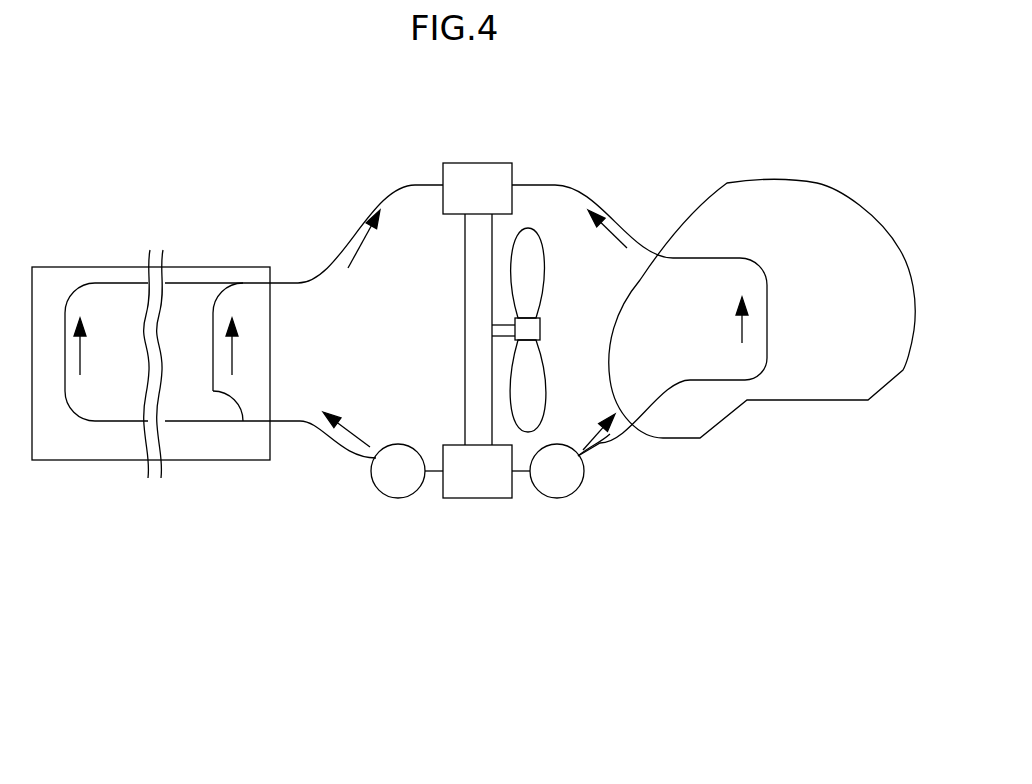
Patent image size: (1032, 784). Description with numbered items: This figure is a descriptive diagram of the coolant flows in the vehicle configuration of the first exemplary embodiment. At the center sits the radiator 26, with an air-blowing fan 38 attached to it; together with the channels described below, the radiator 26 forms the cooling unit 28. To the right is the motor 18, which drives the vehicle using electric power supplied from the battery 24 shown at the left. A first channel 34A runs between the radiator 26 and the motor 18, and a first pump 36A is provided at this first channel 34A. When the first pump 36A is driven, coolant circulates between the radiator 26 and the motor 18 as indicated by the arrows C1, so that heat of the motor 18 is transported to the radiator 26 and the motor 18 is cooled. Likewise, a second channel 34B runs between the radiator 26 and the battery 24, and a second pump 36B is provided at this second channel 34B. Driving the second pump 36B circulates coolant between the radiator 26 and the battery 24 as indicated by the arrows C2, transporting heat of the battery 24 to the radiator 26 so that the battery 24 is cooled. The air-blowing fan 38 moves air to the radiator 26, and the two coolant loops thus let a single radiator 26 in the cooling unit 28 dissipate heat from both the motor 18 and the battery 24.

The motor 18 is at (827, 404).
The battery 24 is at (93, 462).
The radiator 26 is at (478, 505).
The cooling unit 28 is at (425, 604).
The first channel 34A is at (618, 438).
The second channel 34B is at (322, 434).
The first pump 36A is at (560, 499).
The second pump 36B is at (398, 499).
The air-blowing fan 38 is at (549, 268).
The arrows C1 is at (612, 238).
The arrows C2 is at (82, 357).